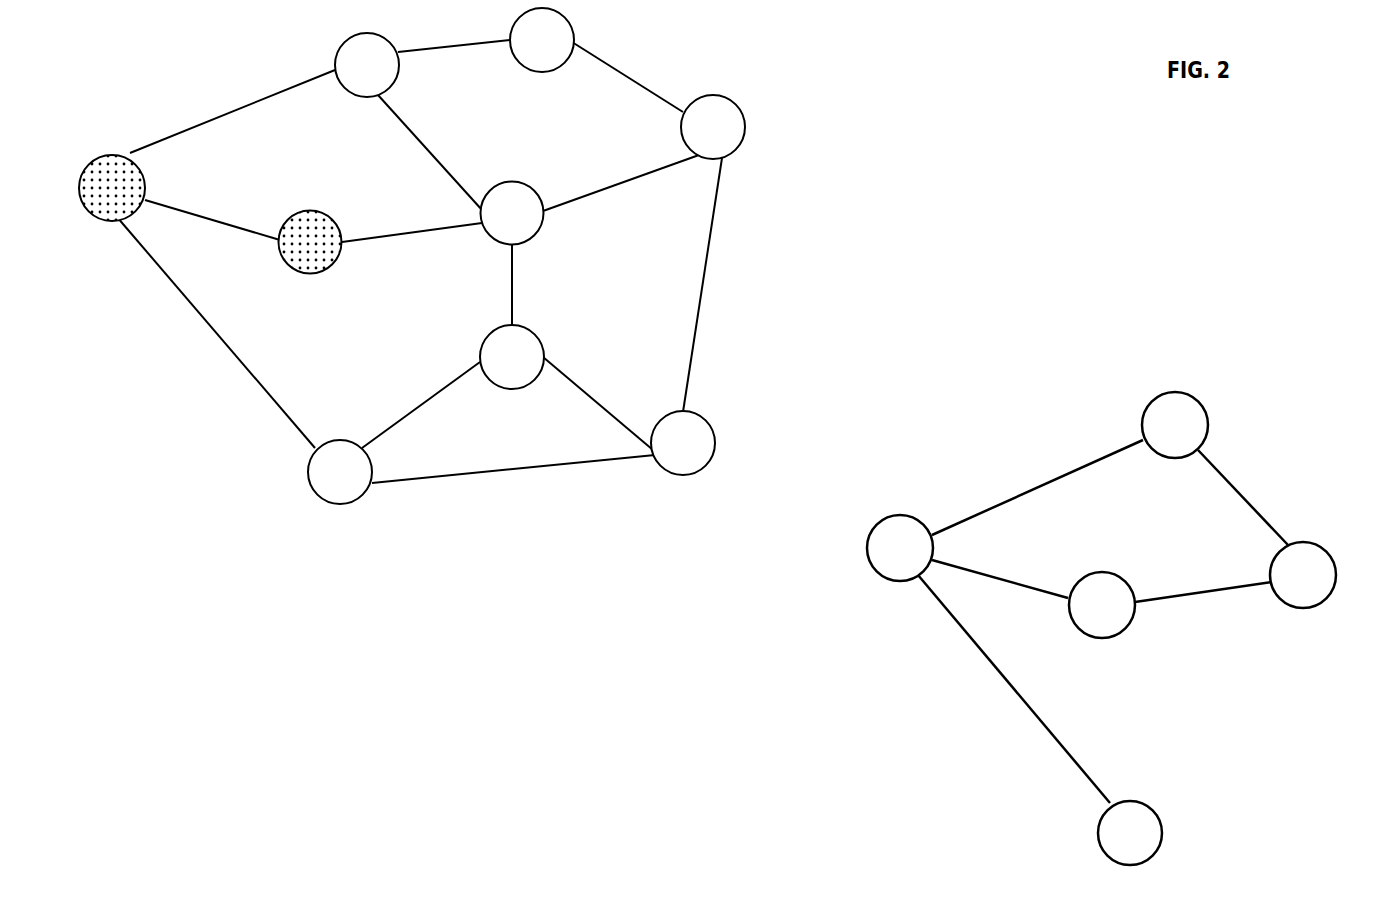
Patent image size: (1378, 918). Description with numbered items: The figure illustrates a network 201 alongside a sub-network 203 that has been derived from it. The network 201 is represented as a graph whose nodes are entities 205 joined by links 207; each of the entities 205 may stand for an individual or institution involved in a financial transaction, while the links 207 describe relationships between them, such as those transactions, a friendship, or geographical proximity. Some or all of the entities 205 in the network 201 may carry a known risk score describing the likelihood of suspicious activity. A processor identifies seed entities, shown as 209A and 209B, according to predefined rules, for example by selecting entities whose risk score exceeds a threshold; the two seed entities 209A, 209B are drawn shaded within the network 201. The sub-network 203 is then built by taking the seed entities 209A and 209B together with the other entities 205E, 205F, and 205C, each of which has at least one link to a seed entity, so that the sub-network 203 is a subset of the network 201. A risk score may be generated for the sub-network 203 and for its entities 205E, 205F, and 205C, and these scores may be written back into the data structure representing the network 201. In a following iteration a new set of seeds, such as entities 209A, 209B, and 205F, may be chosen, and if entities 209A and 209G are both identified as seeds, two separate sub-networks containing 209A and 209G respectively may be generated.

The network 201 is at (228, 88).
The sub-network 203 is at (1074, 394).
The entities 205 is at (550, 72).
The links 207 is at (638, 193).
The seed entity 209A is at (88, 210).
The seed entity 209B is at (348, 202).
The entity 209G is at (715, 457).
The entity 205E is at (1200, 402).
The entity 205F is at (1330, 565).
The entity 205C is at (1155, 803).